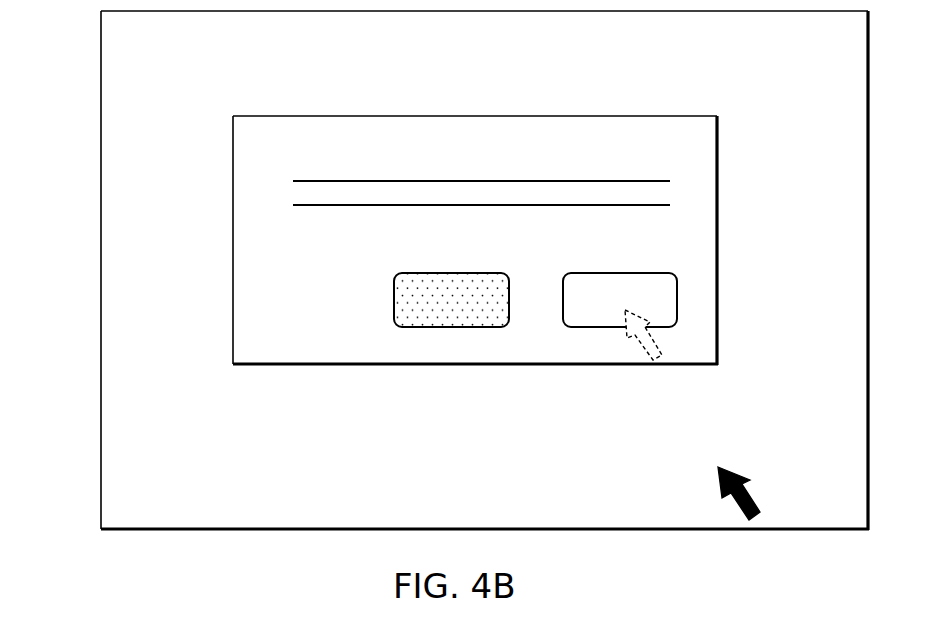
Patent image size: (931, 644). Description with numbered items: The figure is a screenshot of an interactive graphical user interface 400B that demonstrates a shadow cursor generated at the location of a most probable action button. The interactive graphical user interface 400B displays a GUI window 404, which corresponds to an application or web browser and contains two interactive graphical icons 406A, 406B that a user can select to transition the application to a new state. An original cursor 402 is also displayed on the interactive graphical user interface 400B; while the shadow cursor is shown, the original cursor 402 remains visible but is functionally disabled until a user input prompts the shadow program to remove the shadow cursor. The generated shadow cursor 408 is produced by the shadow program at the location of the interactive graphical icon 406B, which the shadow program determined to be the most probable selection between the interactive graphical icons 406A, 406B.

The interactive graphical user interface 400B is at (172, 536).
The original cursor 402 is at (733, 476).
The GUI window 404 is at (365, 115).
The interactive graphical icon 406A is at (451, 273).
The interactive graphical icon 406B is at (617, 273).
The generated shadow cursor 408 is at (657, 346).